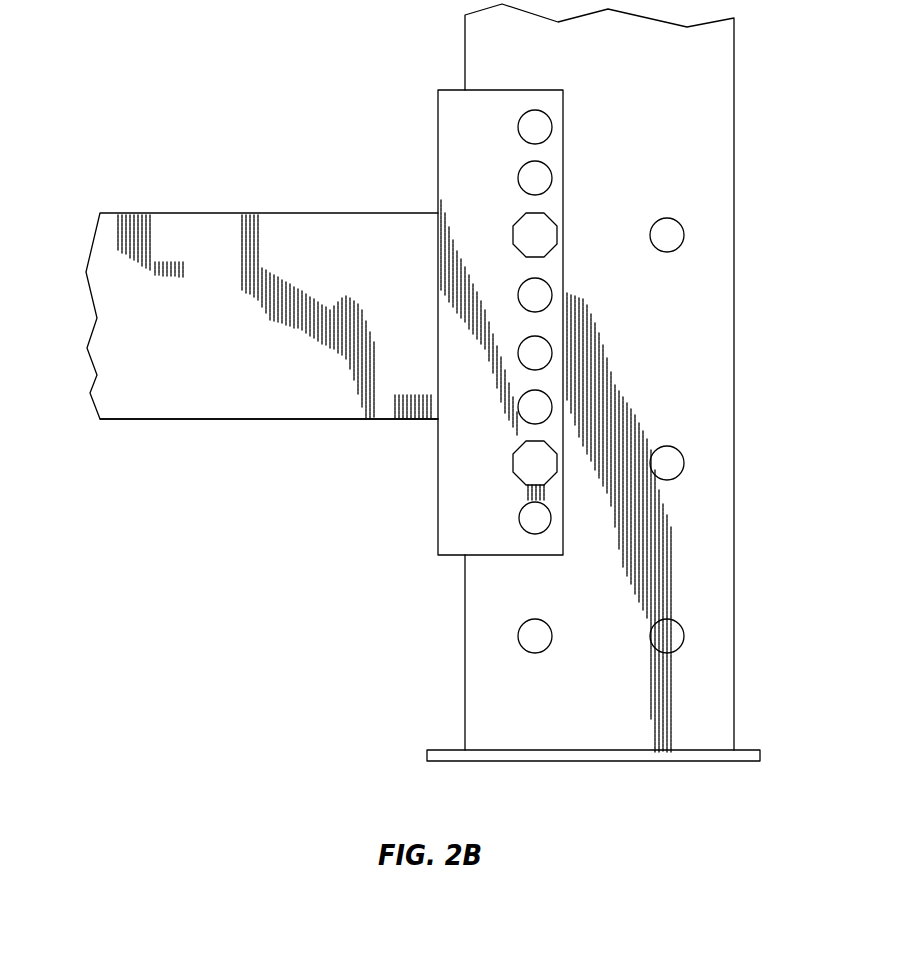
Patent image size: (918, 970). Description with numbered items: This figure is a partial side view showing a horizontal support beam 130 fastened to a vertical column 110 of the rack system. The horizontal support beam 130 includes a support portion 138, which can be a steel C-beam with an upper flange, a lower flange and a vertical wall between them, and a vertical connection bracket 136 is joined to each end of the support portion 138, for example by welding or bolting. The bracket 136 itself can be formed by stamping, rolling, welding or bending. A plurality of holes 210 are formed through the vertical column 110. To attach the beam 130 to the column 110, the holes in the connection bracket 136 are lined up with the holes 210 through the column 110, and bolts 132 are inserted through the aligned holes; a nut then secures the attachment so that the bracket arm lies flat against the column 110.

The vertical column 110 is at (735, 368).
The horizontal support beam 130 is at (132, 383).
The bolts 132 is at (535, 463).
The vertical connection bracket 136 is at (477, 165).
The support portion 138 is at (177, 420).
The holes 210 is at (522, 519).